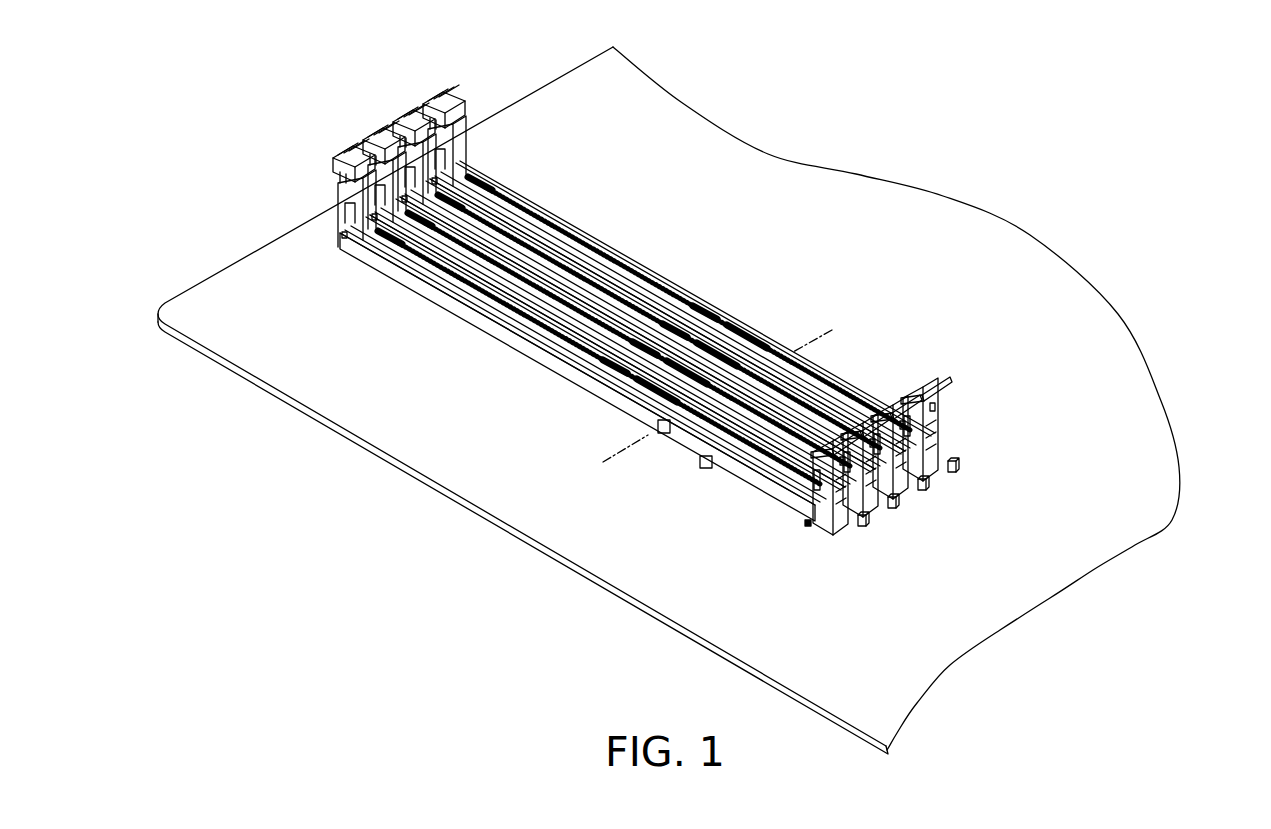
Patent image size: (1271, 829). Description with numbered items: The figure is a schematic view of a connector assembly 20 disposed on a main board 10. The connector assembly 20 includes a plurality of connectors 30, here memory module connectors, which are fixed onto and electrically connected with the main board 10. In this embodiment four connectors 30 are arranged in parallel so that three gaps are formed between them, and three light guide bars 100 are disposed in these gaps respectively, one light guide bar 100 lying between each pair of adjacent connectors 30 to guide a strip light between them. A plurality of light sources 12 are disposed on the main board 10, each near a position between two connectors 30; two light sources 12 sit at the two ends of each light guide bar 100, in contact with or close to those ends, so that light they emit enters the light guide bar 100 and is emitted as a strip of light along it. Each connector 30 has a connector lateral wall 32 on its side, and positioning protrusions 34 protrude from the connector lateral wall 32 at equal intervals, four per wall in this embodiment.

The main board 10 is at (940, 648).
The light source 12 is at (865, 522).
The connector assembly 20 is at (749, 379).
The connector 30 is at (624, 333).
The connector lateral wall 32 is at (760, 480).
The positioning protrusion 34 is at (663, 437).
The light guide bar 100 is at (637, 354).